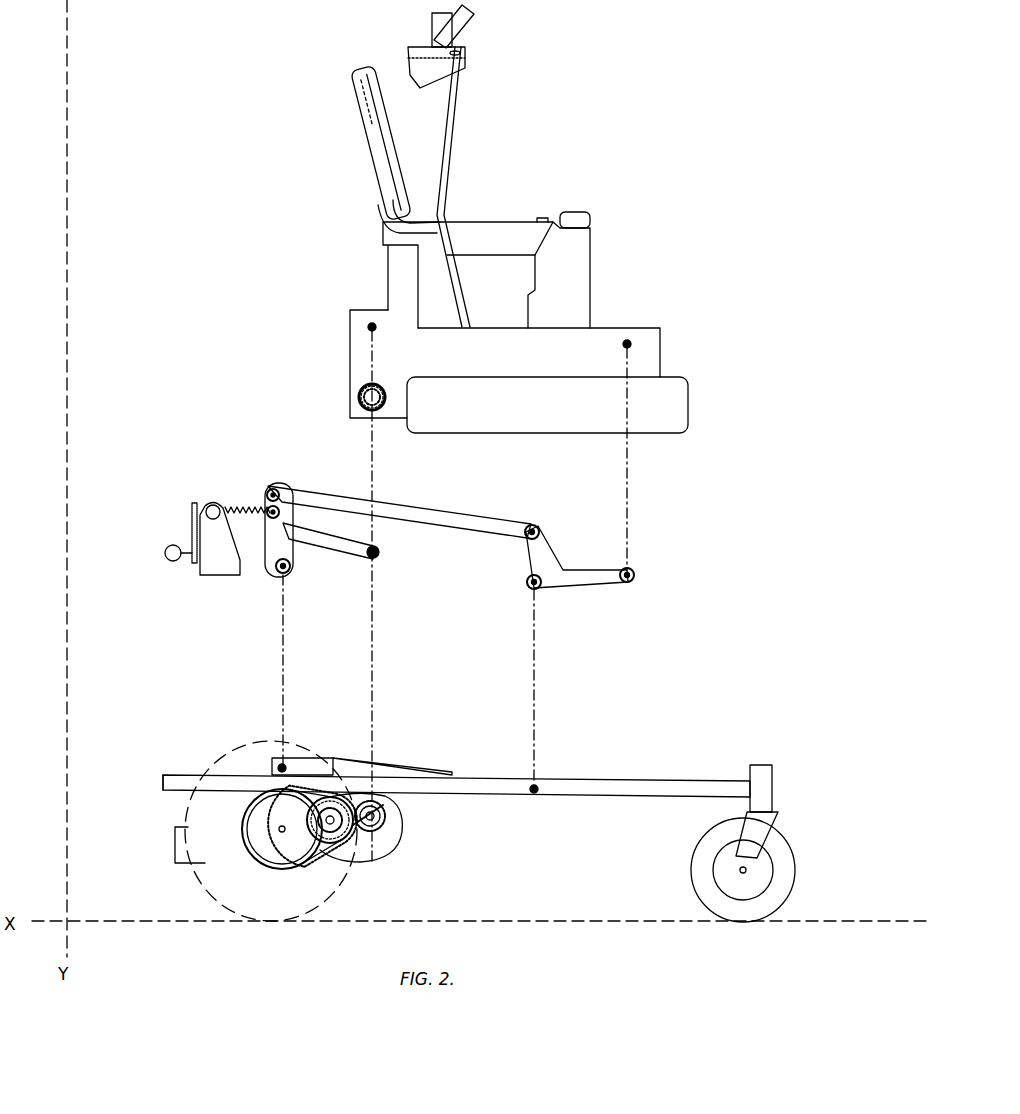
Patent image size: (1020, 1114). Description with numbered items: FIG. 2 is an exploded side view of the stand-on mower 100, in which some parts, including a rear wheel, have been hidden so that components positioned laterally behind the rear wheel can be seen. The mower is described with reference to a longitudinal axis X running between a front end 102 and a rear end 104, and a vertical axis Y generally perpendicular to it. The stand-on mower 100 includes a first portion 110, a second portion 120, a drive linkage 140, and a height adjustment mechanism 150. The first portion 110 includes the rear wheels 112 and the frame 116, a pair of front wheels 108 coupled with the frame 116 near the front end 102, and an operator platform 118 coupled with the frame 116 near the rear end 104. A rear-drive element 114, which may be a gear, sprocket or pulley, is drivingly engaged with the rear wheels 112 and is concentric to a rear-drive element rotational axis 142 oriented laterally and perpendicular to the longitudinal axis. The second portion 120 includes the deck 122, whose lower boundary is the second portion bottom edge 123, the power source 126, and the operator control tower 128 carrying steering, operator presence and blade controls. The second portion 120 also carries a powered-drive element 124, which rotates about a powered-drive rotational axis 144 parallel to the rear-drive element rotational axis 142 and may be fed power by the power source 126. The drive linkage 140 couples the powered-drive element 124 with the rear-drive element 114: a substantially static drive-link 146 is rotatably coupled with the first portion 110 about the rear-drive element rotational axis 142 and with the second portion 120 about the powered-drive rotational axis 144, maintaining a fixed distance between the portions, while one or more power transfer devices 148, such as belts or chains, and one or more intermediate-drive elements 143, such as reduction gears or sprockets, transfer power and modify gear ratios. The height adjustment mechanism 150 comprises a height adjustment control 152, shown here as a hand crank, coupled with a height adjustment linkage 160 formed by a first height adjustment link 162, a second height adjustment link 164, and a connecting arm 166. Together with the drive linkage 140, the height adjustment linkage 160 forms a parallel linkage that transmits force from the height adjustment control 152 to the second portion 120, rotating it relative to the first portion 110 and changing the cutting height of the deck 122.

The stand-on mower 100 is at (203, 100).
The front end 102 is at (773, 793).
The rear end 104 is at (165, 781).
The front wheels 108 is at (745, 903).
The first portion 110 is at (258, 712).
The rear wheels 112 is at (240, 886).
The rear-drive element 114 is at (288, 853).
The frame 116 is at (622, 793).
The operator platform 118 is at (179, 862).
The second portion 120 is at (583, 109).
The deck 122 is at (668, 398).
The second portion bottom edge 123 is at (688, 425).
The powered-drive element 124 is at (360, 402).
The power source 126 is at (588, 269).
The operator control tower 128 is at (349, 138).
The drive linkage 140 is at (407, 838).
The rear-drive element rotational axis 142 is at (284, 828).
The intermediate-drive element 143 is at (378, 843).
The powered-drive rotational axis 144 is at (384, 810).
The drive-link 146 is at (347, 823).
The power transfer devices 148 is at (310, 848).
The height adjustment mechanism 150 is at (266, 450).
The height adjustment control 152 is at (210, 570).
The height adjustment linkage 160 is at (461, 498).
The first height adjustment link 162 is at (283, 543).
The second height adjustment link 164 is at (550, 577).
The connecting arm 166 is at (457, 524).